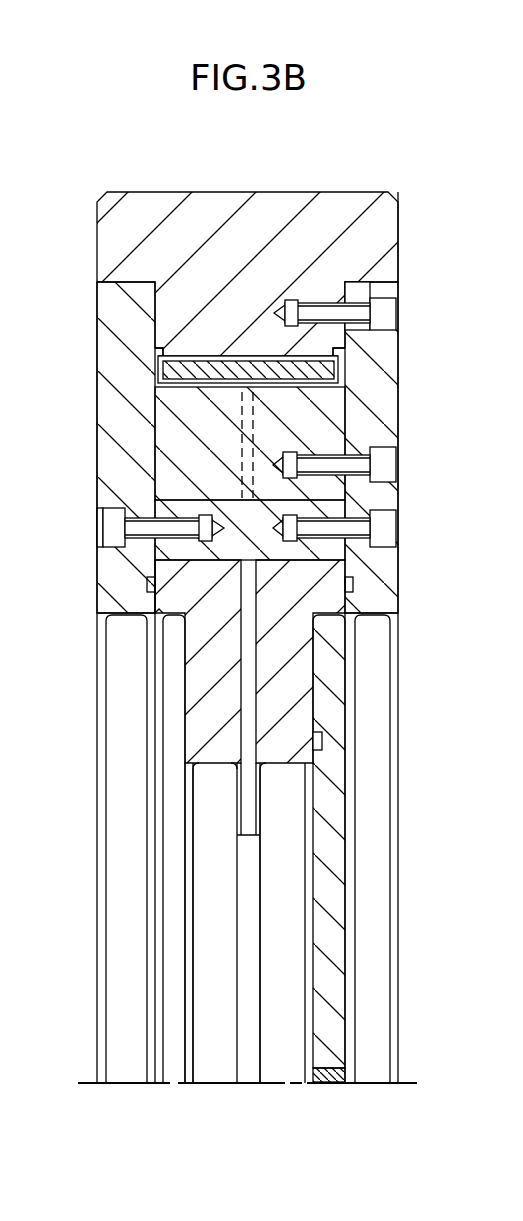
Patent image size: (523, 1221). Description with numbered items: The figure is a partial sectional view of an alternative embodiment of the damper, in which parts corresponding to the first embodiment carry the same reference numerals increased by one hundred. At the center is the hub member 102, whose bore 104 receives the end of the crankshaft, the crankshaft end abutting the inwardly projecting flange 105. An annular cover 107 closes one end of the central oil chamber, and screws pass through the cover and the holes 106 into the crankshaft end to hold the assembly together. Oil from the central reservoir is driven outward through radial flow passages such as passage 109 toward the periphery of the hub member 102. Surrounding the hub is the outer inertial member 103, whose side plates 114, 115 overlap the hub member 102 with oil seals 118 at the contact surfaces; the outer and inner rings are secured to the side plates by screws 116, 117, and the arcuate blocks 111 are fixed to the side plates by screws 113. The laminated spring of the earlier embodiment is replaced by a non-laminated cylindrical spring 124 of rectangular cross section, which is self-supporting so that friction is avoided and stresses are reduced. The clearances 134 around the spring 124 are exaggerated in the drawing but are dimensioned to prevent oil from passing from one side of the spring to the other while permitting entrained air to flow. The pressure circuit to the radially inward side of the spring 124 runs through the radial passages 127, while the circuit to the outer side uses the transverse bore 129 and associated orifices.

The hub member 102 is at (305, 680).
The outer inertial member 103 is at (278, 192).
The bore 104 is at (125, 830).
The inwardly projecting flange 105 is at (202, 742).
The holes 106 is at (197, 628).
The annular cover 107 is at (338, 805).
The radial flow passage 109 is at (333, 613).
The arcuate blocks 111 is at (333, 551).
The screws 113 is at (115, 529).
The side plate 114 is at (398, 416).
The side plate 115 is at (97, 420).
The screws 116 is at (378, 314).
The screws 117 is at (383, 465).
The oil seals 118 is at (146, 584).
The cylindrical spring 124 is at (312, 356).
The radial passages 127 is at (243, 455).
The transverse bore 129 is at (203, 357).
The clearances 134 is at (156, 372).